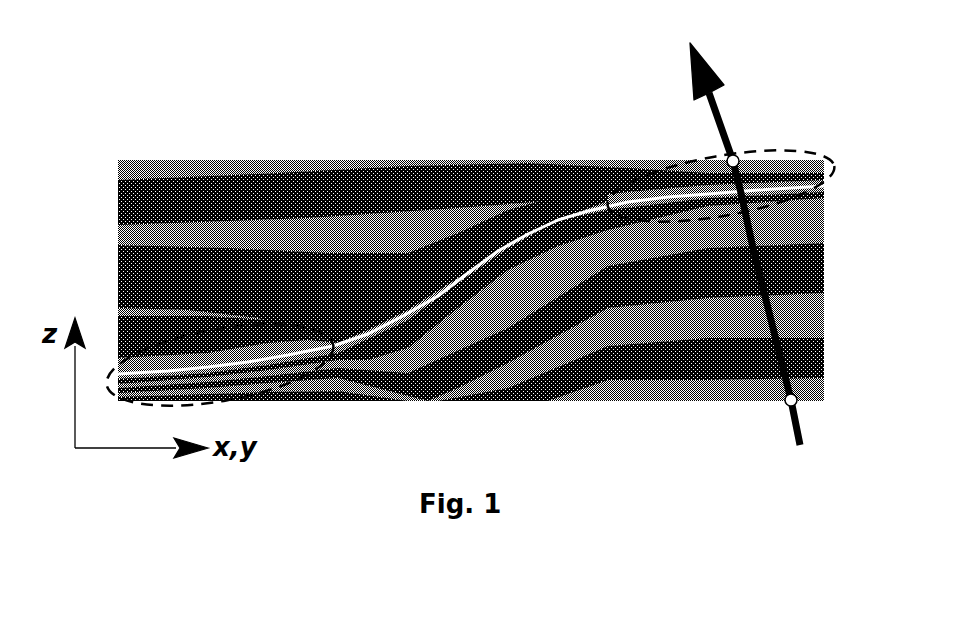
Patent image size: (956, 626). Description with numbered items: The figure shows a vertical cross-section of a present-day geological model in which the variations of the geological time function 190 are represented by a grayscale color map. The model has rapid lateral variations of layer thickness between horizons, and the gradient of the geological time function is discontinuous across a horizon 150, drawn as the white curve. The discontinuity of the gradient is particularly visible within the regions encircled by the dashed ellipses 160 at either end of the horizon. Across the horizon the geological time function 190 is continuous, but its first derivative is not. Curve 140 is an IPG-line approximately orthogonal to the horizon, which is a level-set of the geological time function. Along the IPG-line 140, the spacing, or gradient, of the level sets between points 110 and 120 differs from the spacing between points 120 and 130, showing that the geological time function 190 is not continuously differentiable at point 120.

The point 110 is at (778, 398).
The point 120 is at (700, 198).
The point 130 is at (728, 147).
The IPG-line 140 is at (735, 233).
The horizon 150 is at (455, 270).
The ellipses 160 is at (240, 397).
The geological time function 190 is at (471, 280).